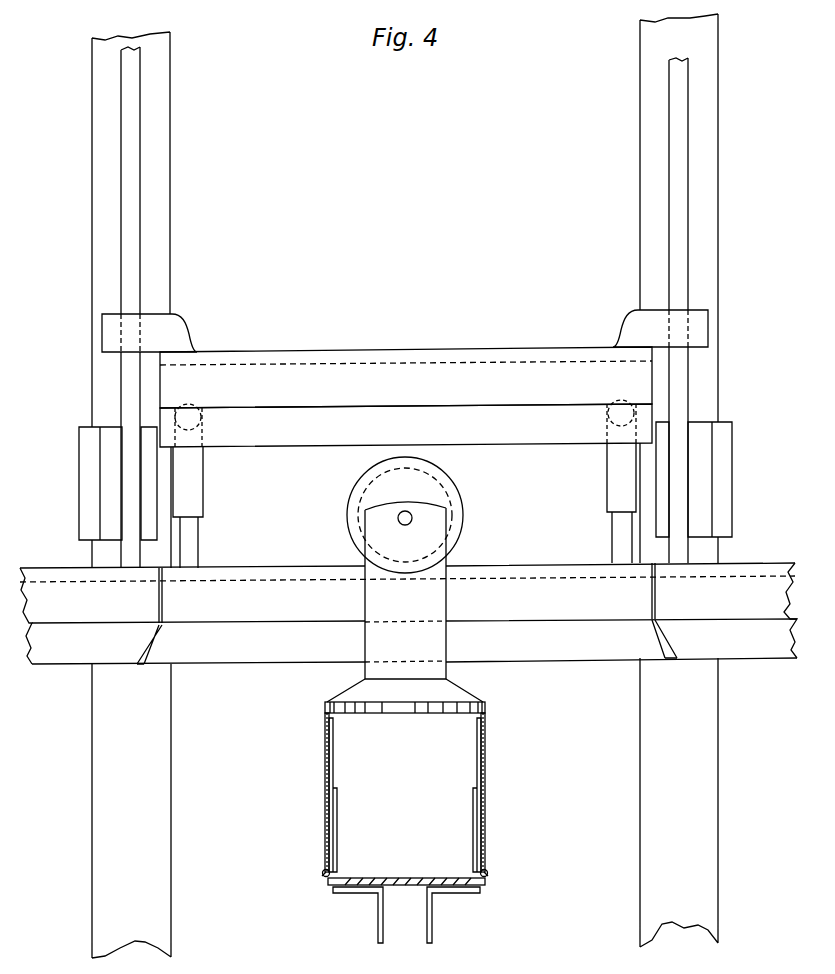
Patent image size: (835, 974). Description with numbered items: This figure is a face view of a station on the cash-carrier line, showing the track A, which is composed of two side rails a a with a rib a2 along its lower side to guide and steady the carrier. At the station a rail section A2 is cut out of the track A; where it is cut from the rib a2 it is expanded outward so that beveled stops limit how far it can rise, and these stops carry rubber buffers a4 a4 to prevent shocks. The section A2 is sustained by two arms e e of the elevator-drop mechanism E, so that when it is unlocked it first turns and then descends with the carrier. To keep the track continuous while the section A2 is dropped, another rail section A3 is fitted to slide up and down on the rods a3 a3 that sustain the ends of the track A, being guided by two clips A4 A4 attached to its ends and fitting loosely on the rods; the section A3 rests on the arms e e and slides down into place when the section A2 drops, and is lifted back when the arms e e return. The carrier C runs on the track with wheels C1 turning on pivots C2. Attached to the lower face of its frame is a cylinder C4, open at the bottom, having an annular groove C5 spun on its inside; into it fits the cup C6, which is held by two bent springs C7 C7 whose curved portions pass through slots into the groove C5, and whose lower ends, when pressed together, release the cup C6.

The track A is at (402, 613).
The side rails a is at (400, 593).
The rib a2 is at (417, 642).
The rods a3 is at (404, 307).
The rubber buffers a4 is at (658, 645).
The rail section A2 is at (434, 590).
The sliding rail section A3 is at (406, 397).
The clips A4 is at (405, 331).
The elevator-drop mechanism E is at (408, 428).
The arms e is at (404, 505).
The carrier C is at (415, 710).
The wheels C1 is at (405, 515).
The pivots C2 is at (398, 518).
The cylinder C4 is at (490, 776).
The annular groove C5 is at (488, 872).
The cup C6 is at (476, 760).
The bent springs C7 is at (472, 818).